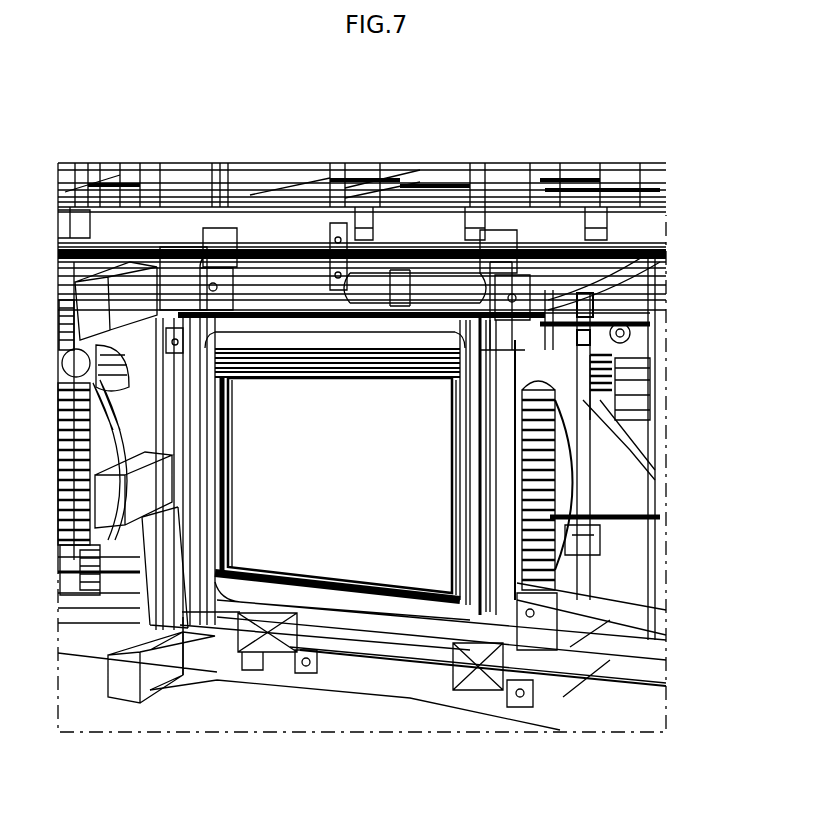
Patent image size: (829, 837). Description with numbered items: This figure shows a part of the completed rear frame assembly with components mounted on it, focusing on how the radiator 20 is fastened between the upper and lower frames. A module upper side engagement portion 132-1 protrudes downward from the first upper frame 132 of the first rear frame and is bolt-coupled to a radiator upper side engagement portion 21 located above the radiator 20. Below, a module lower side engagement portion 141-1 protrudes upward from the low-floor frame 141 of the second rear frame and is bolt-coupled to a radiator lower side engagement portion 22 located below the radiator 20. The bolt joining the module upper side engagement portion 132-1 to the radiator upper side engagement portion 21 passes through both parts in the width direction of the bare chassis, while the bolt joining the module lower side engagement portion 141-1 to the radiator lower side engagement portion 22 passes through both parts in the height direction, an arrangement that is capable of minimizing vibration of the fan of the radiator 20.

The radiator 20 is at (422, 473).
The radiator upper side engagement portion 21 is at (180, 245).
The radiator lower side engagement portion 22 is at (243, 617).
The first upper frame 132 is at (428, 215).
The module upper side engagement portion 132-1 is at (215, 230).
The low-floor frame 141 is at (417, 690).
The module lower side engagement portion 141-1 is at (306, 676).